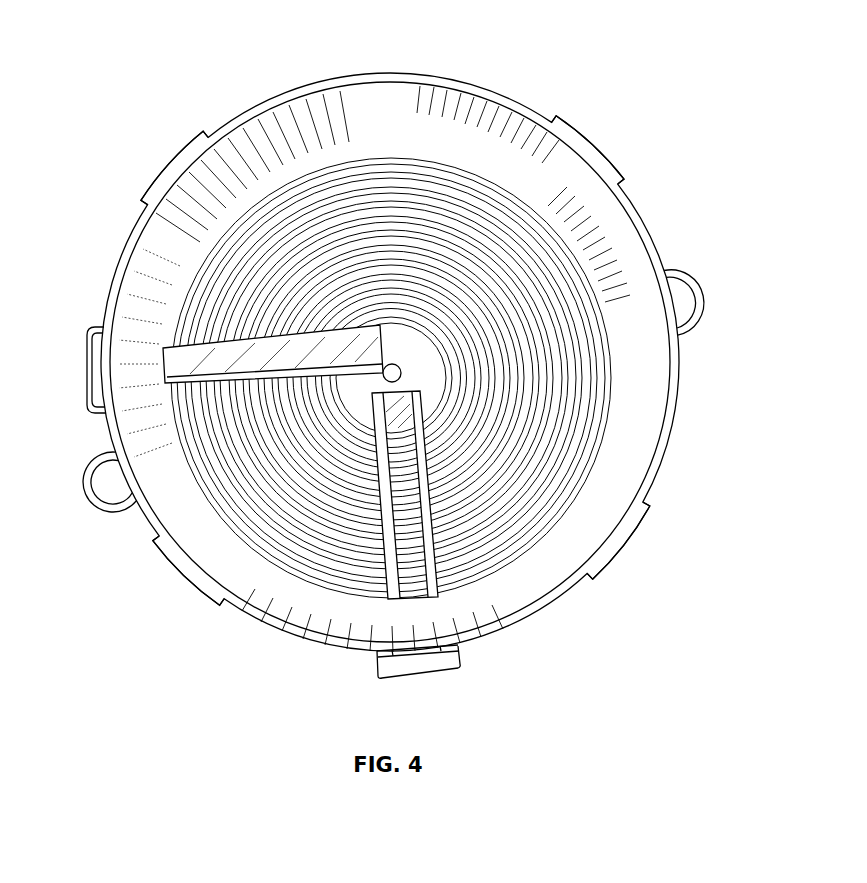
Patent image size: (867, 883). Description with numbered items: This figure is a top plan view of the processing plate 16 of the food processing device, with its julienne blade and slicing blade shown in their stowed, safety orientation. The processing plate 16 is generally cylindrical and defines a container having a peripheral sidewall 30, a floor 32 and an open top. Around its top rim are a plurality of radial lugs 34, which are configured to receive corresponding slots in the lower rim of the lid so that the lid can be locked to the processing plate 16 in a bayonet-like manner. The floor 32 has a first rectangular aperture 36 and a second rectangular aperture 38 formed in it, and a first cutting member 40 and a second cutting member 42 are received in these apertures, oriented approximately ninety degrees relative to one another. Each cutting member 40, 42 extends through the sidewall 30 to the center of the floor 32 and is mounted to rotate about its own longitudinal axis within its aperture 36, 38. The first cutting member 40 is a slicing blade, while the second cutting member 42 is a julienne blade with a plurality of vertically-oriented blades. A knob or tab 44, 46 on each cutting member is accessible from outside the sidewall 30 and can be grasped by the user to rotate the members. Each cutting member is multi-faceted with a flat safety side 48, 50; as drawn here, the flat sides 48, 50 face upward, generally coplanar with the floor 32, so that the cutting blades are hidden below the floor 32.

The processing plate 16 is at (528, 42).
The peripheral sidewall 30 is at (684, 384).
The floor 32 is at (614, 252).
The radial lugs 34 is at (162, 172).
The first rectangular aperture 36 is at (170, 392).
The second rectangular aperture 38 is at (391, 412).
The first cutting member 40 is at (221, 350).
The second cutting member 42 is at (391, 562).
The knob or tab 44 is at (92, 370).
The knob or tab 46 is at (418, 672).
The flat safety side 48 is at (216, 350).
The flat safety side 50 is at (425, 523).